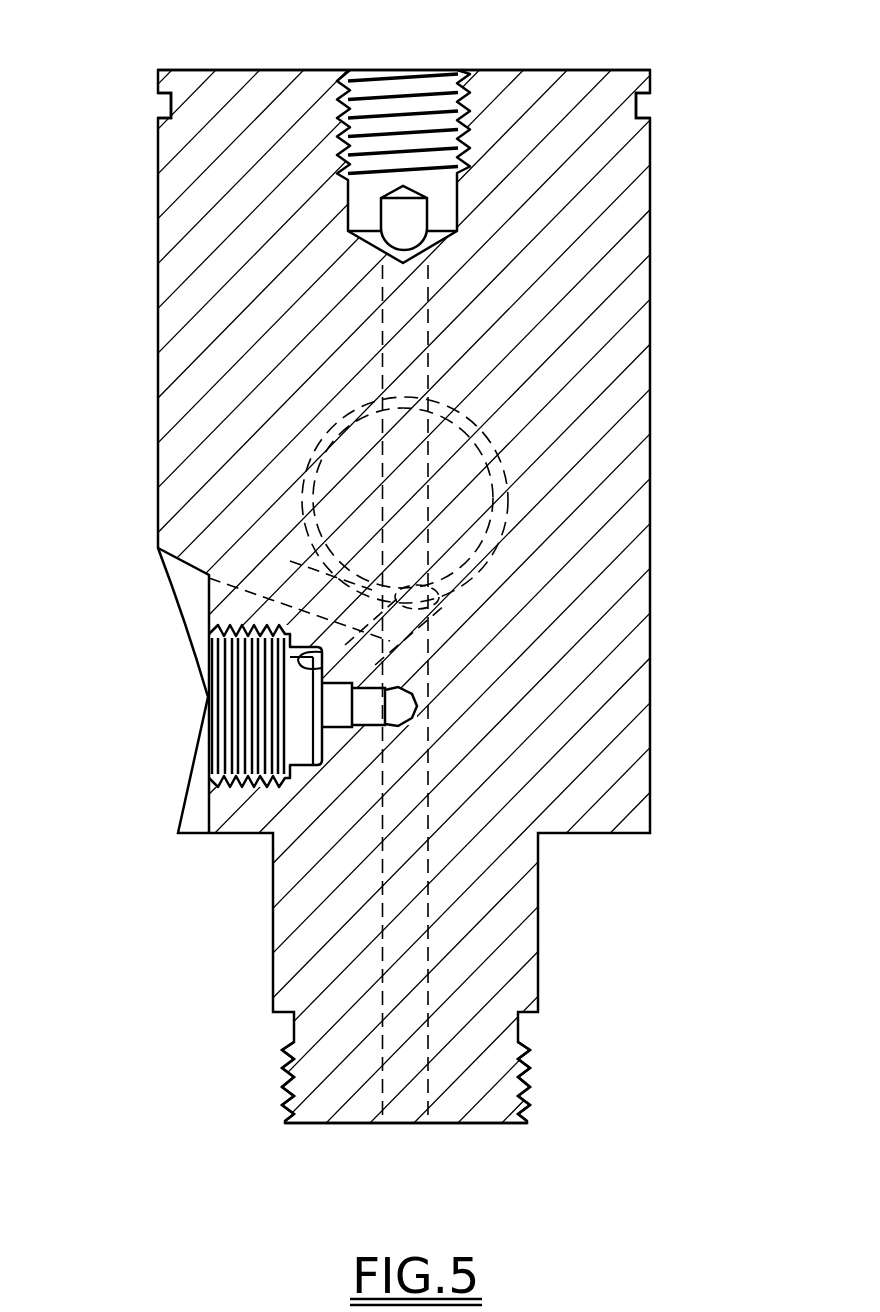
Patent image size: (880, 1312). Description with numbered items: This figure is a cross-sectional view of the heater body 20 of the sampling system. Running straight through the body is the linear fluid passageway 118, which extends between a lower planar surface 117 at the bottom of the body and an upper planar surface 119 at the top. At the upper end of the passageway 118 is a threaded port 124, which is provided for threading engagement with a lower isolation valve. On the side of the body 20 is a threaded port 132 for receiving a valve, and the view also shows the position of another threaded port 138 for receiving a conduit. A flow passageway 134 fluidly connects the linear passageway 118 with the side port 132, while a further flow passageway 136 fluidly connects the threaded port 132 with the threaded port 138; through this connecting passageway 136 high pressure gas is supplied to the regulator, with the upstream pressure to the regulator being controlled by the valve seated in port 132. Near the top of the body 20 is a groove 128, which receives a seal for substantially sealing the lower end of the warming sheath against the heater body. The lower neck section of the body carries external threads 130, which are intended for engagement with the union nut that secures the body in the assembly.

The heater body 20 is at (178, 283).
The lower planar surface 117 is at (450, 1125).
The linear fluid passageway 118 is at (420, 268).
The upper planar surface 119 is at (545, 70).
The threaded port 124 is at (347, 100).
The groove 128 is at (170, 108).
The threads 130 is at (285, 1085).
The threaded port 132 is at (258, 708).
The flow passageway 134 is at (372, 712).
The flow passageway 136 is at (207, 577).
The threaded port 138 is at (503, 527).